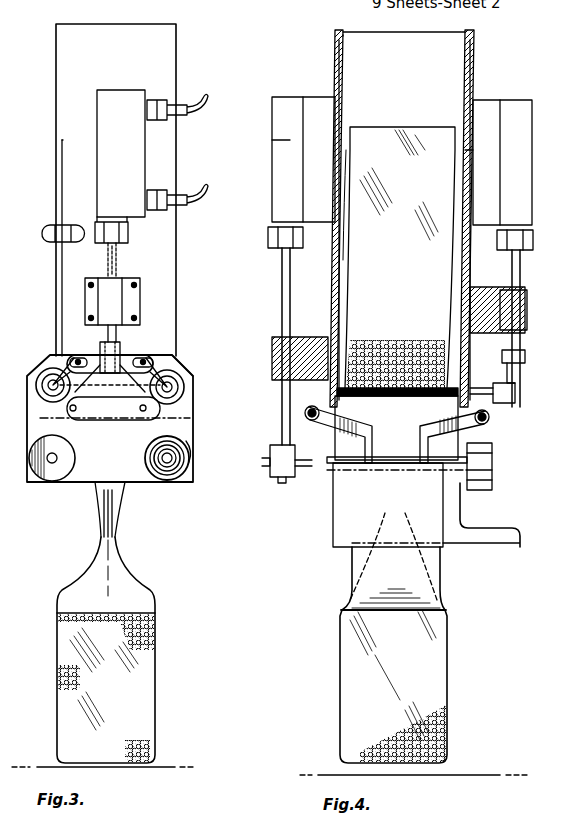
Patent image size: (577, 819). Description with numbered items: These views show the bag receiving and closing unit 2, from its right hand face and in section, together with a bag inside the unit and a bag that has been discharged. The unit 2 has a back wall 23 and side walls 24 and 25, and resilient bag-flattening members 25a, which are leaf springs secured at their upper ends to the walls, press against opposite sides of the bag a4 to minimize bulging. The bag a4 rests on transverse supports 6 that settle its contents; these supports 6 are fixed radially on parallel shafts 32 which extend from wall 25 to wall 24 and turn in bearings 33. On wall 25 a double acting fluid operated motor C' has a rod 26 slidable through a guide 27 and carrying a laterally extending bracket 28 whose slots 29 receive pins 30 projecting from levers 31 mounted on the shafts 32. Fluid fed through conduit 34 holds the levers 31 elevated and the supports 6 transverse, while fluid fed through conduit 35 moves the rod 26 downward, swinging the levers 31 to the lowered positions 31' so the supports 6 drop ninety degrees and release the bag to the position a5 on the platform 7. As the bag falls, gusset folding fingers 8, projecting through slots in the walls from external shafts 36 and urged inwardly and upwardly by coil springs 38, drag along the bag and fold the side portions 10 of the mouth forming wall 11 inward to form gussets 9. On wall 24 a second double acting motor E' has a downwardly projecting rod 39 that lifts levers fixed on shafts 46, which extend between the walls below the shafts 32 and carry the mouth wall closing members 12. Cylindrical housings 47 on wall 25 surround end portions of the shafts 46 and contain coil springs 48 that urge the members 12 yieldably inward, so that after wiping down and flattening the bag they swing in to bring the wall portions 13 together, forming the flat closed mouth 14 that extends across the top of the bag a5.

In FIG. 3, the bag receiving and closing unit 2 is at (180, 62).
In FIG. 4, the bag receiving and closing unit 2 is at (478, 55).
In FIG. 3, the transverse supports 6 is at (30, 410).
In FIG. 4, the transverse supports 6 is at (343, 470).
In FIG. 3, the second support or platform 7 is at (163, 767).
In FIG. 4, the second support or platform 7 is at (459, 775).
In FIG. 4, the gusset folding fingers 8 is at (342, 425).
In FIG. 3, the gussets 9 is at (118, 562).
In FIG. 4, the gussets 9 is at (378, 548).
In FIG. 4, the opposite side portions 10 is at (345, 150).
In FIG. 4, the mouth forming wall portion 11 is at (405, 135).
In FIG. 3, the mouth wall closing members 12 is at (125, 490).
In FIG. 4, the mouth wall closing members 12 is at (455, 502).
In FIG. 3, the wall portion between gussets 13 is at (100, 508).
In FIG. 4, the wall portion between gussets 13 is at (392, 520).
In FIG. 4, the closed mouth wall 14 is at (365, 525).
In FIG. 4, the back wall 23 is at (368, 45).
In FIG. 4, the side wall 24 is at (343, 85).
In FIG. 3, the side wall 25 is at (120, 65).
In FIG. 4, the side wall 25 is at (472, 80).
In FIG. 4, the bag-flattening members 25a is at (455, 167).
In FIG. 3, the projecting rod 26 is at (117, 250).
In FIG. 4, the projecting rod 26 is at (522, 265).
In FIG. 3, the guide 27 is at (115, 303).
In FIG. 4, the guide 27 is at (527, 305).
In FIG. 3, the laterally extending bracket 28 is at (120, 365).
In FIG. 4, the laterally extending bracket 28 is at (518, 356).
In FIG. 3, the slots 29 is at (145, 358).
In FIG. 3, the pins 30 is at (153, 362).
In FIG. 3, the levers 31 is at (122, 362).
In FIG. 4, the levers 31 is at (512, 387).
In FIG. 3, the lowered positions of levers 31' is at (113, 420).
In FIG. 3, the parallel shafts 32 is at (192, 370).
In FIG. 4, the parallel shafts 32 is at (272, 362).
In FIG. 3, the bearings 33 is at (36, 385).
In FIG. 3, the conduit 34 is at (204, 184).
In FIG. 3, the conduit 35 is at (204, 92).
In FIG. 4, the external supporting shafts 36 is at (305, 413).
In FIG. 4, the coil springs 38 is at (352, 385).
In FIG. 4, the downwardly projecting rod 39 is at (285, 300).
In FIG. 3, the shafts 46 is at (58, 458).
In FIG. 3, the cylindrical housings 47 is at (190, 445).
In FIG. 4, the cylindrical housings 47 is at (494, 470).
In FIG. 3, the coil springs 48 is at (190, 462).
In FIG. 3, the double acting fluid operated motor C' is at (130, 166).
In FIG. 4, the double acting fluid operated motor C' is at (513, 175).
In FIG. 4, the double acting fluid operated motor E' is at (289, 170).
In FIG. 4, the bag at settling position a4 is at (425, 205).
In FIG. 3, the bag at discharged position a5 is at (150, 652).
In FIG. 4, the bag at discharged position a5 is at (425, 682).